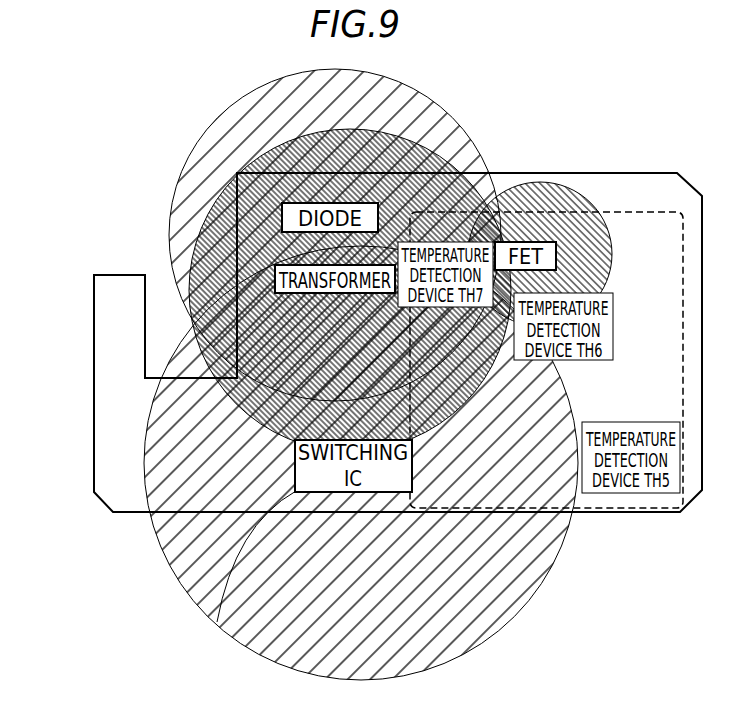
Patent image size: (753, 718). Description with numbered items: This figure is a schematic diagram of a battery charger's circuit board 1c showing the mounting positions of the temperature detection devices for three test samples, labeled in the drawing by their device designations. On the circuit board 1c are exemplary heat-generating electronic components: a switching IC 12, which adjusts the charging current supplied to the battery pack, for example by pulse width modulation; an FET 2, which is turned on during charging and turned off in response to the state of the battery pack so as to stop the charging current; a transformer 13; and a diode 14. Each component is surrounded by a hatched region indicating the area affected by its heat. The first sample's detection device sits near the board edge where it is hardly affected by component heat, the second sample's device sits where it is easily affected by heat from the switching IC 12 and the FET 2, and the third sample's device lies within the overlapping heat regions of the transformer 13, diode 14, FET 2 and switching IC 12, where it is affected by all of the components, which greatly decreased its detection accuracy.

The circuit board 1c is at (94, 302).
The FET 2 is at (562, 238).
The switching IC 12 is at (217, 623).
The transformer 13 is at (223, 253).
The diode 14 is at (238, 178).